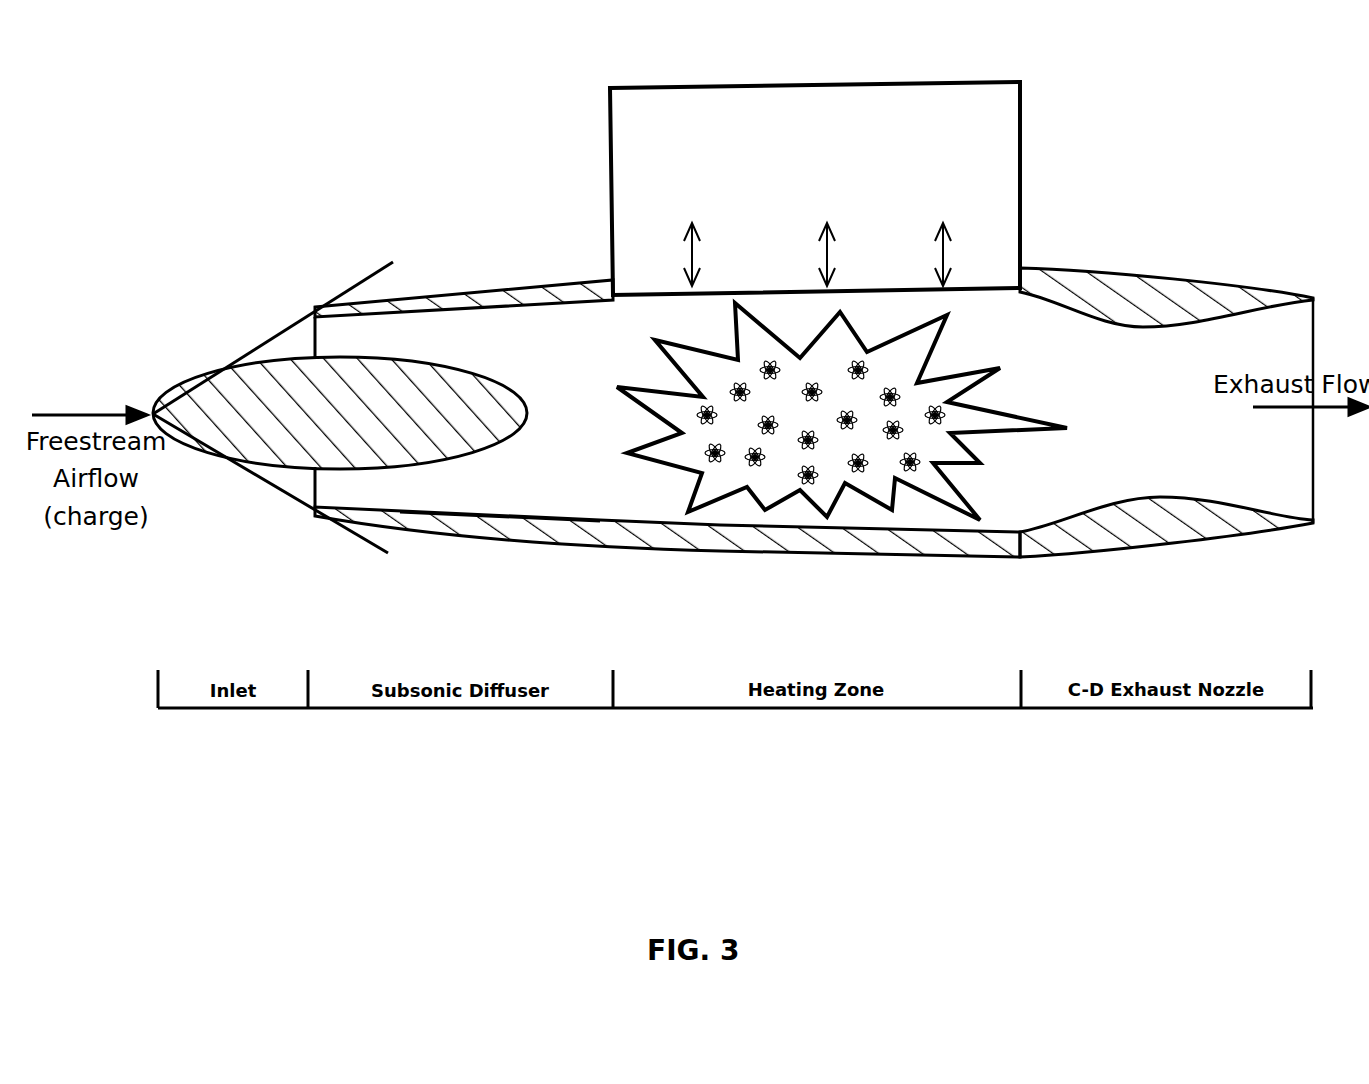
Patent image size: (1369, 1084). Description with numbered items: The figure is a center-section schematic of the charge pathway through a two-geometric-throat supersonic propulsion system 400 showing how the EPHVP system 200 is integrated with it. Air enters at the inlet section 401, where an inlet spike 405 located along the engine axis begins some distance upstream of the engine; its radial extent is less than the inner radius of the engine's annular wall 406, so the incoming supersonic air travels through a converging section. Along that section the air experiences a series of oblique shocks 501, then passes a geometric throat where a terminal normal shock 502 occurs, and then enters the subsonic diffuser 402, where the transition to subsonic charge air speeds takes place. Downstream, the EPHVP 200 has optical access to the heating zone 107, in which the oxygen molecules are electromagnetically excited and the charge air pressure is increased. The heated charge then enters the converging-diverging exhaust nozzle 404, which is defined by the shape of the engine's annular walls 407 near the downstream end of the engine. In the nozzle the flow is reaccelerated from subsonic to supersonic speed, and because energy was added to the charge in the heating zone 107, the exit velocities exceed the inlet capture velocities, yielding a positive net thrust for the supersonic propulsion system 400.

The heating zone 107 is at (873, 485).
The EPHVP system 200 is at (975, 70).
The supersonic propulsion system 400 is at (400, 222).
The inlet section 401 is at (177, 465).
The subsonic diffuser 402 is at (480, 490).
The converging-diverging exhaust nozzle 404 is at (1158, 390).
The inlet spike 405 is at (380, 362).
The annular wall 406 is at (422, 518).
The annular walls 407 is at (1145, 325).
The oblique shocks 501 is at (213, 377).
The terminal normal shock 502 is at (315, 482).